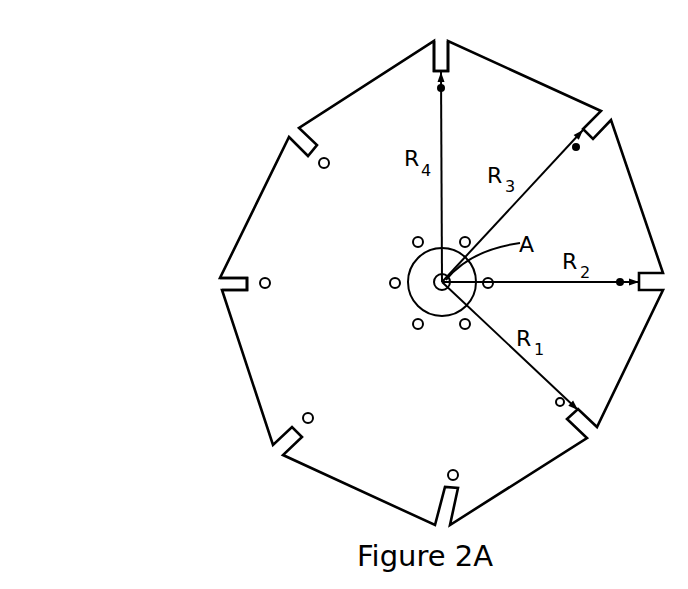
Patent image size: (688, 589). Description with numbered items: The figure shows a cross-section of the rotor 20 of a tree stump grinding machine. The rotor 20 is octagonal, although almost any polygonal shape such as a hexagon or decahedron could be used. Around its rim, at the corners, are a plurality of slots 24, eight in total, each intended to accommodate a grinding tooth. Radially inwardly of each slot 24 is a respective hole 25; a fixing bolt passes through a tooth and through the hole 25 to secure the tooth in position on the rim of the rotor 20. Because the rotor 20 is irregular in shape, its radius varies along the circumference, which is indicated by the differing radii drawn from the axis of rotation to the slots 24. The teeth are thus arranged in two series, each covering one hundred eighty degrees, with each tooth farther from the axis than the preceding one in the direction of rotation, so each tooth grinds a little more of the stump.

The rotor 20 is at (178, 588).
The slot 24 is at (222, 282).
The hole 25 is at (413, 80).